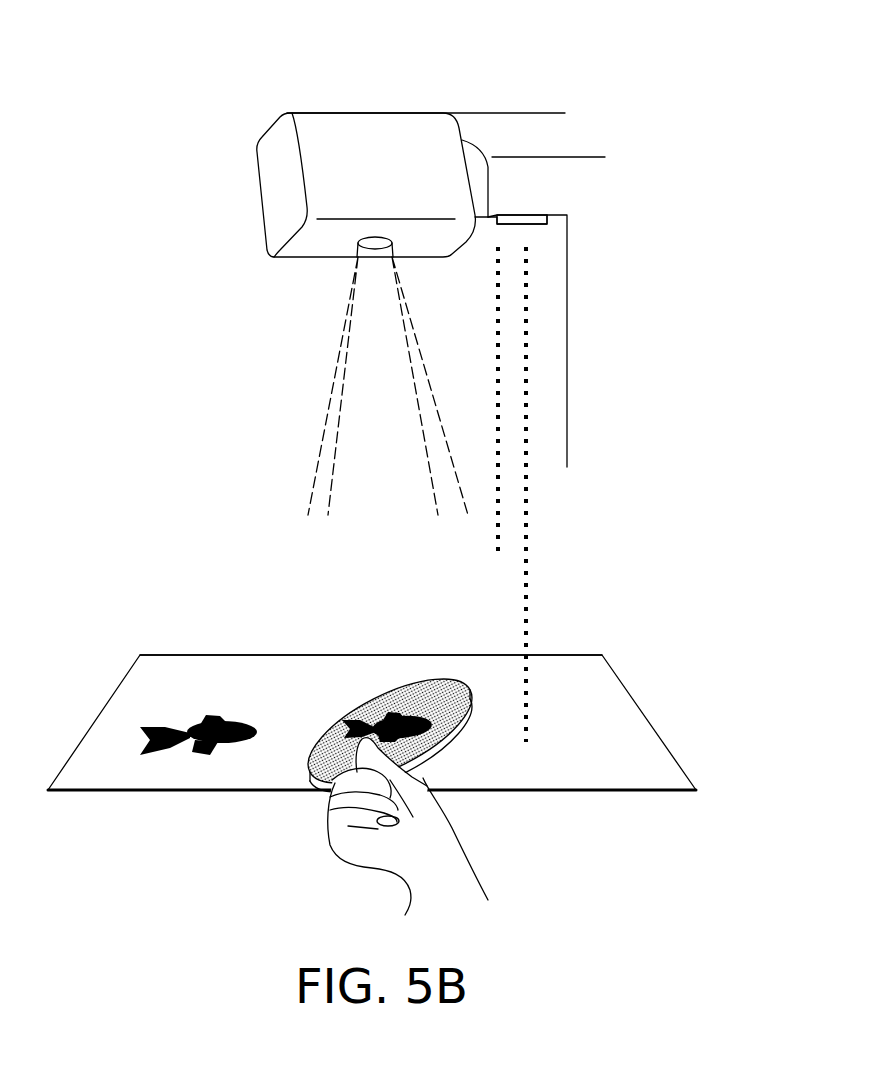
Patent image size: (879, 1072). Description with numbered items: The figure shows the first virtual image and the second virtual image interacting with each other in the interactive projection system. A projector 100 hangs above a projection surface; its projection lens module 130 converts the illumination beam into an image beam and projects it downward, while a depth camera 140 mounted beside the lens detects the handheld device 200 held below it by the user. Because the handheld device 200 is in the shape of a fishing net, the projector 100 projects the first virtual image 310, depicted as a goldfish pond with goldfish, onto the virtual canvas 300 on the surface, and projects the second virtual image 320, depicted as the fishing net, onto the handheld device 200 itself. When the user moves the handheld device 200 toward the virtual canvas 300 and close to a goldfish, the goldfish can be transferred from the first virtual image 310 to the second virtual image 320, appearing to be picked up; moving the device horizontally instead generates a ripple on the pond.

The projector 100 is at (515, 118).
The projection lens module 130 is at (352, 128).
The depth camera 140 is at (525, 220).
The handheld device 200 is at (438, 747).
The virtual canvas 300 is at (600, 794).
The first virtual image 310 is at (247, 662).
The second virtual image 320 is at (313, 753).